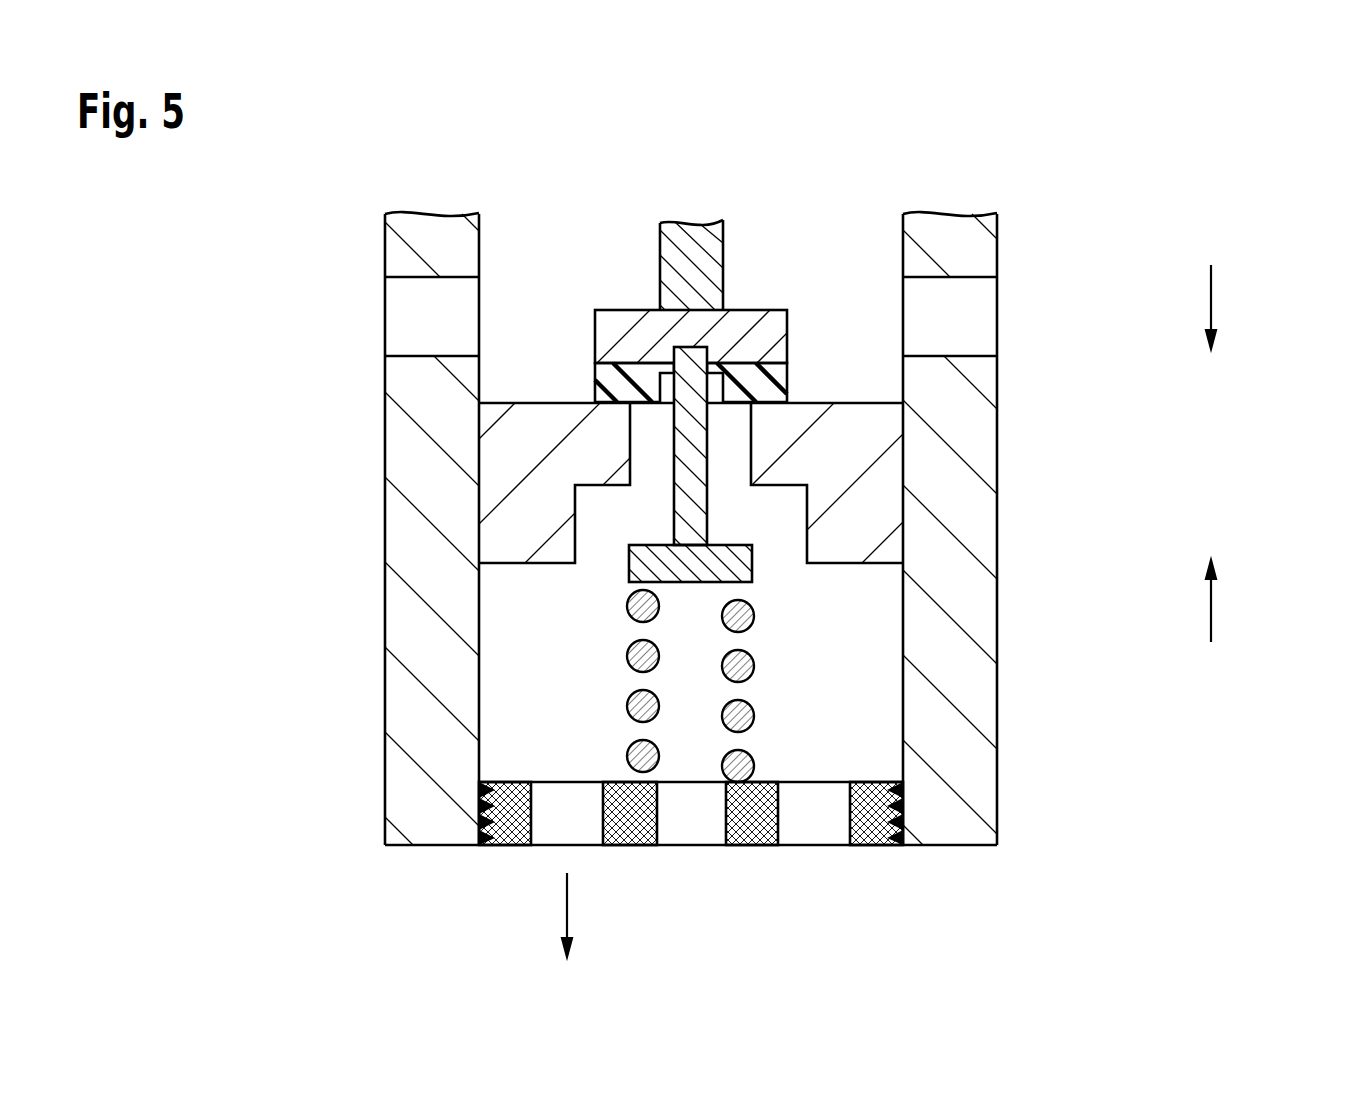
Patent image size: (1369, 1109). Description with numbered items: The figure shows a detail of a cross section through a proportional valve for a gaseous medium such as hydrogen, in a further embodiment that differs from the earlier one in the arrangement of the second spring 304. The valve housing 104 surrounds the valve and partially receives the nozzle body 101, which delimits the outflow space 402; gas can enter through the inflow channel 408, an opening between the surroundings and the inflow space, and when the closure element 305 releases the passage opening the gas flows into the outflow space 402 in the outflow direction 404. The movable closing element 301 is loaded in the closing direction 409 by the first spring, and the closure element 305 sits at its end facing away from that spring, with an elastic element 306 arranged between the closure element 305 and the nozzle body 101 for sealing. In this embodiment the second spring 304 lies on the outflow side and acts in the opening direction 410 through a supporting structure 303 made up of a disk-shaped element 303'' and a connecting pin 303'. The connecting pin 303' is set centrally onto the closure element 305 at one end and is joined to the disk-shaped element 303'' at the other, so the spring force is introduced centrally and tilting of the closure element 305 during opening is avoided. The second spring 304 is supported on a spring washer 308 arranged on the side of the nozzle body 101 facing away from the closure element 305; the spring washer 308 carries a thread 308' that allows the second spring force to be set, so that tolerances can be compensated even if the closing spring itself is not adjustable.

The nozzle body 101 is at (519, 512).
The valve housing 104 is at (411, 385).
The closing element 301 is at (691, 243).
The supporting structure 303 is at (890, 464).
The connecting pin 303' is at (910, 446).
The disk-shaped element 303'' is at (890, 561).
The second spring 304 is at (740, 666).
The closure element 305 is at (770, 327).
The elastic element 306 is at (757, 387).
The spring washer 308 is at (691, 859).
The thread 308' is at (699, 859).
The outflow space 402 is at (848, 736).
The outflow direction 404 is at (567, 916).
The inflow channel 408 is at (973, 318).
The closing direction 409 is at (1211, 297).
The opening direction 410 is at (1211, 612).